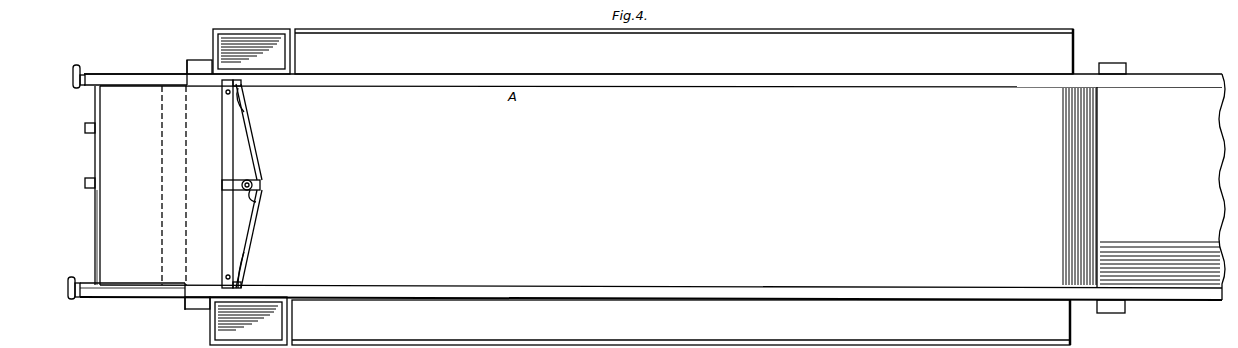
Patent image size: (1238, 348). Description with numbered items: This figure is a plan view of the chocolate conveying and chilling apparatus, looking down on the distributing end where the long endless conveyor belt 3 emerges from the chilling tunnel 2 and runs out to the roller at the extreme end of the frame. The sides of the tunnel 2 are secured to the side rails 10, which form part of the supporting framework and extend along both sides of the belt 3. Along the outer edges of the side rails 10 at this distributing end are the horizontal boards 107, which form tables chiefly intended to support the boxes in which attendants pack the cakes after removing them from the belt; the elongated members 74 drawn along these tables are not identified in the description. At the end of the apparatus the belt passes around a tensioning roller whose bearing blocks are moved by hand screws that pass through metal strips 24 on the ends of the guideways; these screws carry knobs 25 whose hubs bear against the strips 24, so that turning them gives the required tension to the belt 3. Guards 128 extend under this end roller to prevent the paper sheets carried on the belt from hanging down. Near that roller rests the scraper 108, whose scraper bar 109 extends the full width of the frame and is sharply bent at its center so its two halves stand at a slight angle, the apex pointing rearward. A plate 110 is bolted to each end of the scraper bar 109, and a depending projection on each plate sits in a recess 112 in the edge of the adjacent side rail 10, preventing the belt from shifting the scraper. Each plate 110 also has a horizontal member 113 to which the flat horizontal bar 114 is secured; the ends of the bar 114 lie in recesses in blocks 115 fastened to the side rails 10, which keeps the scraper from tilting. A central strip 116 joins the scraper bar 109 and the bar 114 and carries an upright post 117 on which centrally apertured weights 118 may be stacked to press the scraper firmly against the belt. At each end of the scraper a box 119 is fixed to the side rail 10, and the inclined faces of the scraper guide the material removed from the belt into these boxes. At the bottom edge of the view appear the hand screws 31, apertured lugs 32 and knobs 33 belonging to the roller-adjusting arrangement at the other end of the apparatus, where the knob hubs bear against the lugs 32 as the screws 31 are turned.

The tunnel member 2 is at (1158, 187).
The endless conveyor belt 3 is at (850, 186).
The side rails 10 is at (501, 87).
The metal strips 24 is at (84, 92).
The knobs 25 is at (77, 65).
The hand screws 31 is at (180, 342).
The apertured lugs 32 is at (147, 339).
The knobs 33 is at (116, 342).
The upper housing 74 is at (500, 32).
The horizontal boards 107 is at (681, 196).
The scraper 108 is at (246, 230).
The scraper bar 109 is at (262, 160).
The plate 110 is at (240, 80).
The recess 112 is at (210, 72).
The horizontal member 113 is at (244, 105).
The flat horizontal bar 114 is at (226, 153).
The blocks 115 is at (205, 78).
The central strip 116 is at (227, 185).
The upright post 117 is at (262, 183).
The weights 118 is at (253, 193).
The box 119 is at (275, 55).
The guards 128 is at (93, 236).